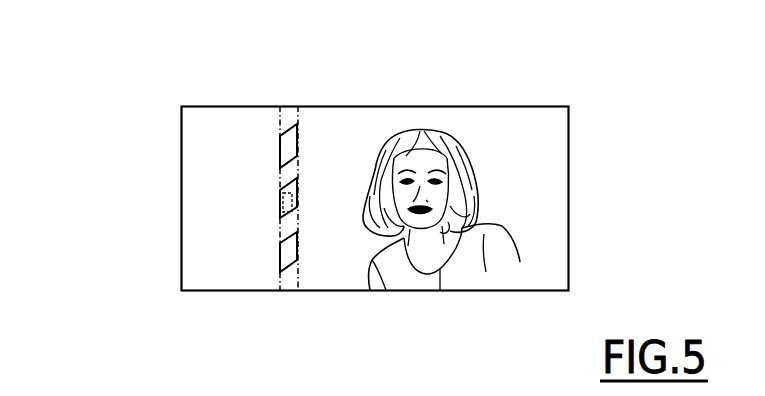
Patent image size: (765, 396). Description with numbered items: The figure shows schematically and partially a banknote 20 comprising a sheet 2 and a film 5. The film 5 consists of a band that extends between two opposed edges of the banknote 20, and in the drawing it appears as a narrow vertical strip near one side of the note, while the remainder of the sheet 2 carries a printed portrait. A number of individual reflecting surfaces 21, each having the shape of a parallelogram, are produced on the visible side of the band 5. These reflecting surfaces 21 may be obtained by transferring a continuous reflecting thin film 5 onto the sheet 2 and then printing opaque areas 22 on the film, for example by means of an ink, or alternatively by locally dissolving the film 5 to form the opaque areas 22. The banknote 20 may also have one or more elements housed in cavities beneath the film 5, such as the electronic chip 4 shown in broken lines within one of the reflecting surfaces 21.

The sheet 2 is at (545, 248).
The electronic chip 4 is at (286, 200).
The film 5 is at (288, 118).
The banknote 20 is at (587, 141).
The reflecting surfaces 21 is at (298, 141).
The opaque areas 22 is at (283, 121).